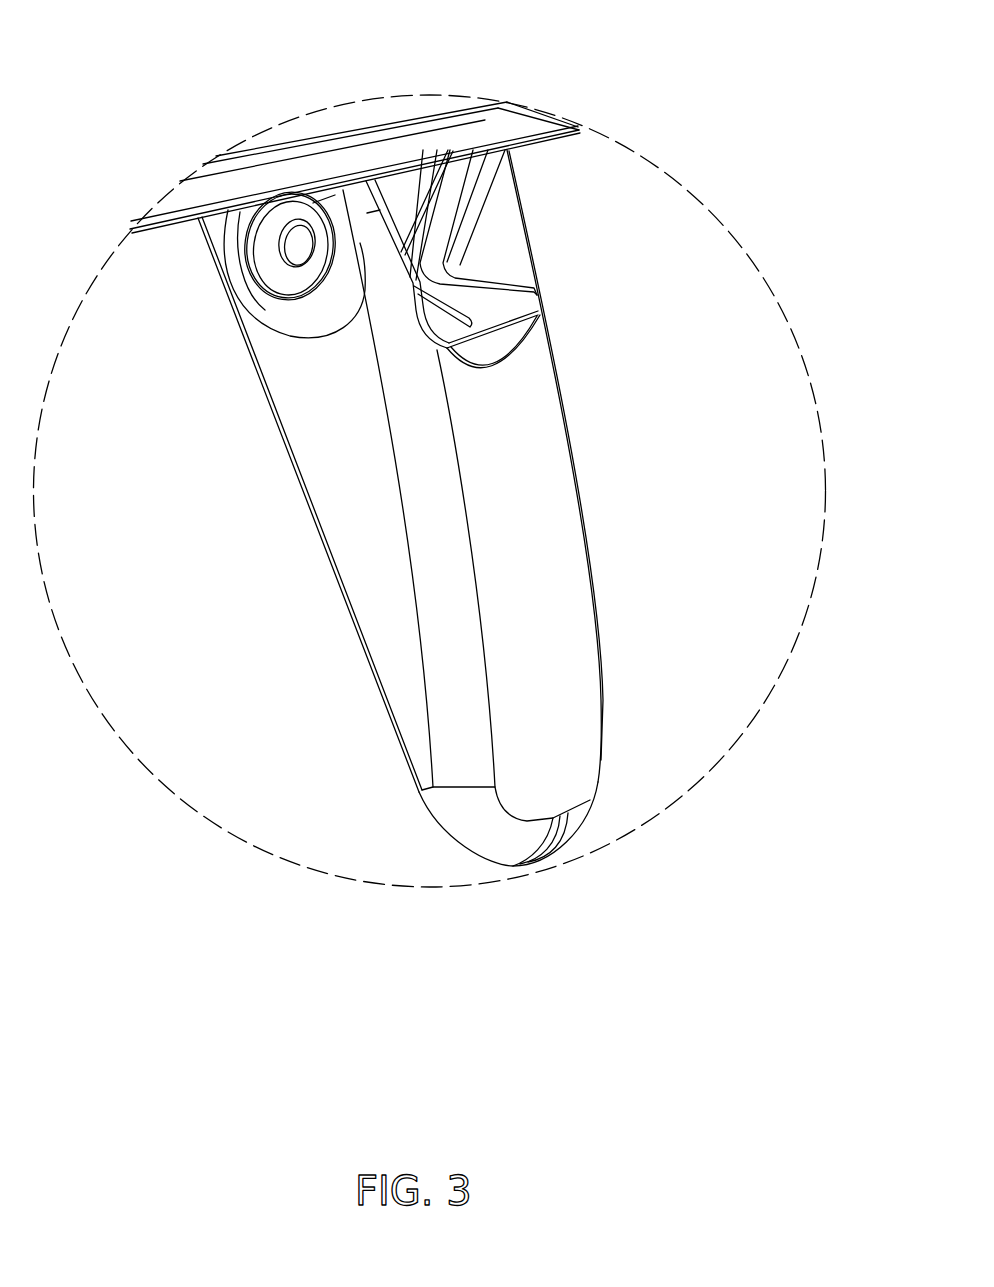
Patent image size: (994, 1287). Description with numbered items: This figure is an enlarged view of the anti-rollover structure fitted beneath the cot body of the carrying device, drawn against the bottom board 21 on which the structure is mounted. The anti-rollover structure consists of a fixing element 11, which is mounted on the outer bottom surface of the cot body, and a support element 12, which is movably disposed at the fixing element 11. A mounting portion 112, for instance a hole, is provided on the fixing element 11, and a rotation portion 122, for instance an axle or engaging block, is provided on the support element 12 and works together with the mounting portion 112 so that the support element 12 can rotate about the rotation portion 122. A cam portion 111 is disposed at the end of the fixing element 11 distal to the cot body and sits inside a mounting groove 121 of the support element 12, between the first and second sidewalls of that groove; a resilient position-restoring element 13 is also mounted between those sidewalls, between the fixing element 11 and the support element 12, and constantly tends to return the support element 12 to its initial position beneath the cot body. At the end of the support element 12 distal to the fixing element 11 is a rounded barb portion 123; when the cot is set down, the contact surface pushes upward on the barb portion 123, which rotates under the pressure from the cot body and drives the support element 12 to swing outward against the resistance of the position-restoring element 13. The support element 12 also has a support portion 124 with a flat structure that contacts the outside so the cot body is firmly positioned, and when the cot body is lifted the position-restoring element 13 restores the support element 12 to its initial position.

The fixing element 11 is at (395, 200).
The support element 12 is at (397, 533).
The position-restoring element 13 is at (443, 303).
The bottom board 21 is at (510, 123).
The cam portion 111 is at (468, 223).
The mounting portion 112 is at (300, 237).
The mounting groove 121 is at (530, 319).
The rotation portion 122 is at (360, 295).
The barb portion 123 is at (482, 843).
The support portion 124 is at (312, 513).